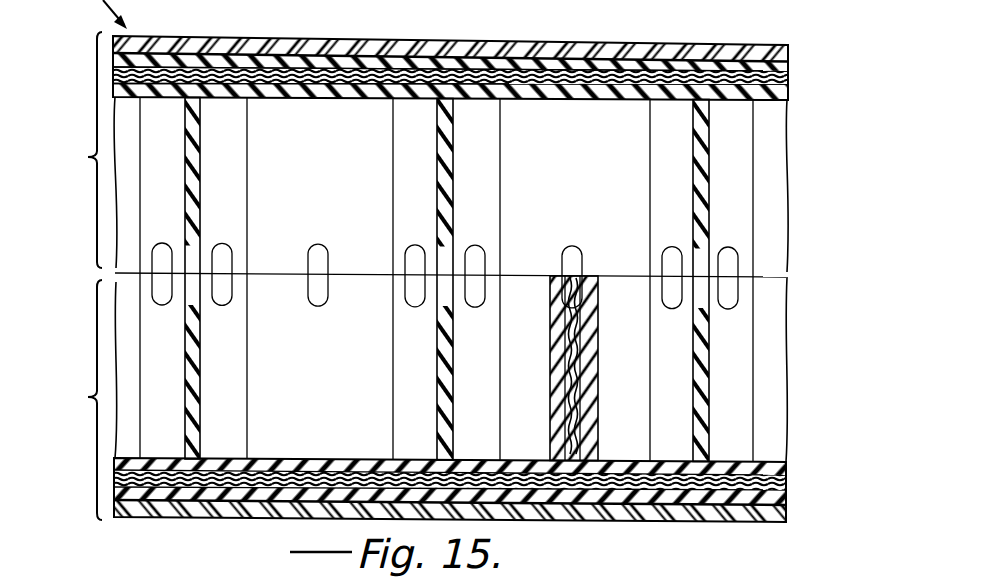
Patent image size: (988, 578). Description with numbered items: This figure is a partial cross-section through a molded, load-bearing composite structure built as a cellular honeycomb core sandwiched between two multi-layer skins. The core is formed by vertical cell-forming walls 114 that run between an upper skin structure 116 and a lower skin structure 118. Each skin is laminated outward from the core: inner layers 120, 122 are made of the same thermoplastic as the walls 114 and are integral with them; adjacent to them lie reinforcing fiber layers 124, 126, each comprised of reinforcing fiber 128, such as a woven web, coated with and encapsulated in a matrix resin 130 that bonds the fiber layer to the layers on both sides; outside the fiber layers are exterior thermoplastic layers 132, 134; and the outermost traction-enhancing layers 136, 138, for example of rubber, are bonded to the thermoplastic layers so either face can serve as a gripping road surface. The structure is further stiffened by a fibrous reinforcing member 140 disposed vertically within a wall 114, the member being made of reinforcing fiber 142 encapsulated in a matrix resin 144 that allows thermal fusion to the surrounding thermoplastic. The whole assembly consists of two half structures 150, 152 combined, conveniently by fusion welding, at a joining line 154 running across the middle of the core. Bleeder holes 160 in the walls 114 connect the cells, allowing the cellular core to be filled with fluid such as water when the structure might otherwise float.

The walls 114 is at (798, 160).
The skin structure 116 is at (797, 112).
The skin structure 118 is at (797, 527).
The inner layer 120 is at (270, 95).
The inner layer 122 is at (530, 460).
The reinforcing fiber layer 124 is at (348, 110).
The reinforcing fiber layer 126 is at (275, 418).
The reinforcing fiber 128 is at (505, 92).
The matrix resin 130 is at (370, 460).
The thermoplastic layer 132 is at (695, 67).
The thermoplastic layer 134 is at (740, 503).
The traction-enhancing layer 136 is at (630, 52).
The traction-enhancing layer 138 is at (648, 521).
The reinforcing member 140 is at (622, 322).
The reinforcing fiber 142 is at (593, 378).
The matrix resin 144 is at (596, 420).
The half structure 150 is at (68, 150).
The half structure 152 is at (68, 400).
The joining line 154 is at (815, 250).
The bleeder holes 160 is at (215, 248).